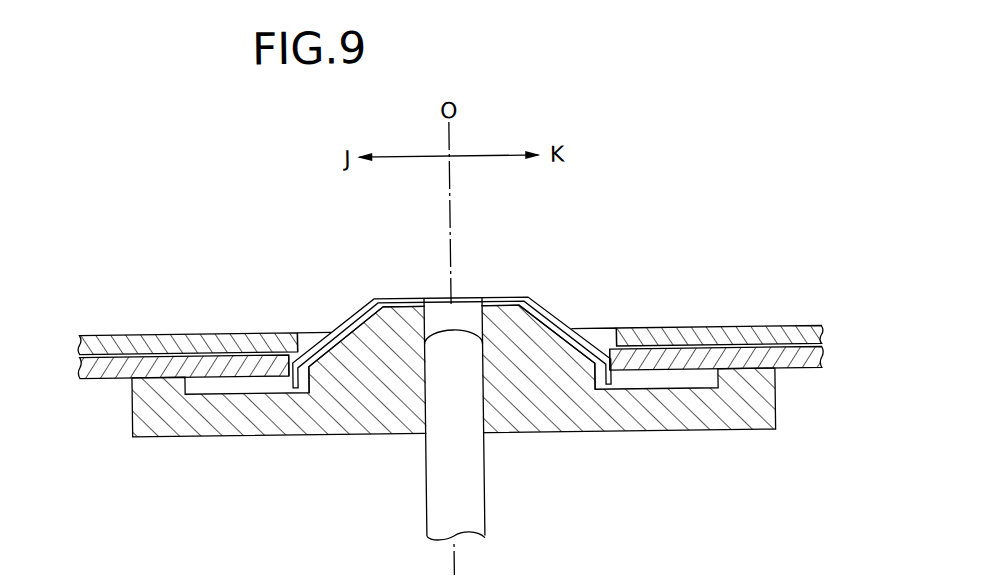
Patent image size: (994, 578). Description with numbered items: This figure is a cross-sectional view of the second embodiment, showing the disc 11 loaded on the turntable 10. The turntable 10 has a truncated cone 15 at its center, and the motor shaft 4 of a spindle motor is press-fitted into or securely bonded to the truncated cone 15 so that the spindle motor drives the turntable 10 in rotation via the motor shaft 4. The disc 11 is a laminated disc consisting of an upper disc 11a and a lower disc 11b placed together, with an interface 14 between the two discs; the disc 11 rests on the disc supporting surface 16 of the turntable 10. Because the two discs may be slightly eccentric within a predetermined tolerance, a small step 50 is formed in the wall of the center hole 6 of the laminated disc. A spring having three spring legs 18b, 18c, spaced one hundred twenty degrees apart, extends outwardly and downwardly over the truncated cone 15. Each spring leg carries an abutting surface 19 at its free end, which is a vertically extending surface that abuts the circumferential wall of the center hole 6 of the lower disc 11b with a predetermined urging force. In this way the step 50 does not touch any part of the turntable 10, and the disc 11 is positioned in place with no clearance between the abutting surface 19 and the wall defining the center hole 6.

The motor shaft 4 is at (440, 498).
The center hole 6 is at (313, 326).
The turntable 10 is at (652, 414).
The disc 11 is at (716, 335).
The upper disc 11a is at (793, 328).
The lower disc 11b is at (800, 373).
The interface 14 is at (192, 333).
The truncated cone 15 is at (355, 392).
The disc supporting surface 16 is at (153, 374).
The spring leg 18b is at (347, 320).
The spring leg 18c is at (553, 312).
The abutting surface 19 is at (275, 348).
The step 50 is at (609, 331).